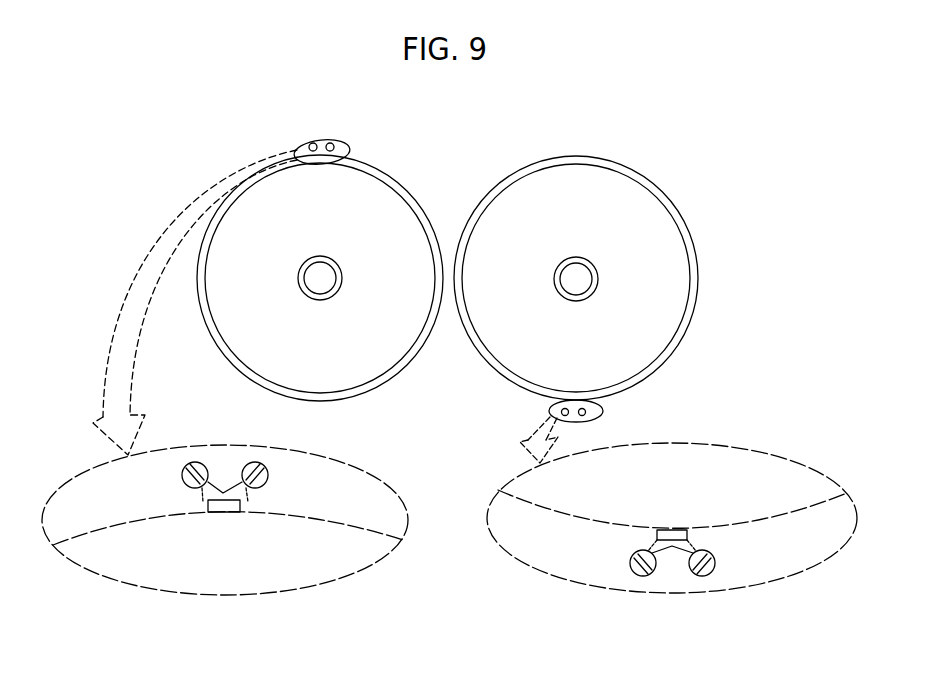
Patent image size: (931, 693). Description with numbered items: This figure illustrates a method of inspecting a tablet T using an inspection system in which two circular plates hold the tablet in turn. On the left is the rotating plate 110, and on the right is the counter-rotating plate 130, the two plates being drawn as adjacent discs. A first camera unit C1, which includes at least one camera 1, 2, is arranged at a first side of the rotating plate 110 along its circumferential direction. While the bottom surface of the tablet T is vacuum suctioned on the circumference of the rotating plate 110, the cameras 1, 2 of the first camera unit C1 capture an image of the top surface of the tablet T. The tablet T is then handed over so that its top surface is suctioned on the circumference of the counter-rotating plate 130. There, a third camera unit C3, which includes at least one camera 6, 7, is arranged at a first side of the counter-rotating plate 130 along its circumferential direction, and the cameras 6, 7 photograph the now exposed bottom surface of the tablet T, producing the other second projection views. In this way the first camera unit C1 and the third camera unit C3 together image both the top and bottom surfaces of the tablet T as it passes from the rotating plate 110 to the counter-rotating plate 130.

The rotating plate 110 is at (388, 348).
The counter-rotating plate 130 is at (642, 348).
The camera 1 is at (190, 462).
The camera 2 is at (252, 462).
The camera 6 is at (643, 577).
The camera 7 is at (702, 590).
The first camera unit C1 is at (221, 432).
The third camera unit C3 is at (672, 596).
The tablet T is at (228, 512).